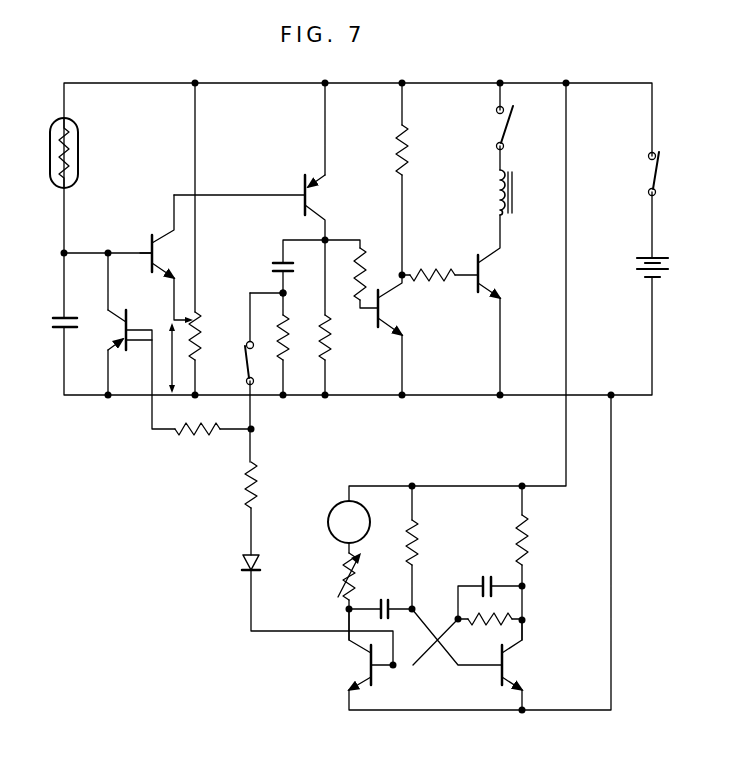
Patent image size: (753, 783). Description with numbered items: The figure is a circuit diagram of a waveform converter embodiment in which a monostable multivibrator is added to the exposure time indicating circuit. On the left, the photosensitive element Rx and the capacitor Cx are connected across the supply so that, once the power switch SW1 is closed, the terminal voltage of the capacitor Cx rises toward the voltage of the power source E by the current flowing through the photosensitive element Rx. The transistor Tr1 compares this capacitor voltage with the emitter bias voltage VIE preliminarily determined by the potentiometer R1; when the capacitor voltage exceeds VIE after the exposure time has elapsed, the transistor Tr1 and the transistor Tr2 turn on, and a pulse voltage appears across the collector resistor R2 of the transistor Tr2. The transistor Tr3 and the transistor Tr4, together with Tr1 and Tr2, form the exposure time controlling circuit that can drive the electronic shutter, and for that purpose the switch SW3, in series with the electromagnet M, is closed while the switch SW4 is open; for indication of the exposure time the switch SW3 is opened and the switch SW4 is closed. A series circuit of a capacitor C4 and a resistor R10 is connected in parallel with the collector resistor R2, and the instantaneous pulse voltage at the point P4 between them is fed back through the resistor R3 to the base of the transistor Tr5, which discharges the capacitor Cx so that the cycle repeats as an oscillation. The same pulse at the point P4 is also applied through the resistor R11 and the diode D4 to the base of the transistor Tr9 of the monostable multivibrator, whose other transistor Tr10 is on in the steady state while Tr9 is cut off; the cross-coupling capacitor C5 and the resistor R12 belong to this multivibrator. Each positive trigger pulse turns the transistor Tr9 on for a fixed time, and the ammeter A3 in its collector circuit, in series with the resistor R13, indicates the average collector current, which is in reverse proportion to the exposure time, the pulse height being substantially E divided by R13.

The photosensitive element Rx is at (78, 156).
The capacitor Cx is at (56, 323).
The transistor Tr5 is at (124, 332).
The transistor Tr1 is at (154, 253).
The potentiometer R1 is at (200, 330).
The emitter bias voltage VIE is at (174, 358).
The switch SW4 is at (247, 349).
The resistor R3 is at (203, 425).
The transistor Tr2 is at (312, 198).
The capacitor C4 is at (287, 263).
The point of contact P4 is at (286, 296).
The resistor R10 is at (290, 346).
The collector resistor R2 is at (326, 344).
The transistor Tr3 is at (384, 312).
The transistor Tr4 is at (484, 276).
The switch SW3 is at (508, 115).
The electromagnet M is at (514, 190).
The power switch SW1 is at (653, 158).
The power source E is at (656, 258).
The resistor R11 is at (256, 480).
The diode D4 is at (258, 554).
The ammeter A3 is at (329, 515).
The resistor R13 is at (344, 570).
The capacitor C5 is at (398, 598).
The resistor R12 is at (418, 544).
The transistor Tr9 is at (368, 666).
The transistor Tr10 is at (508, 666).